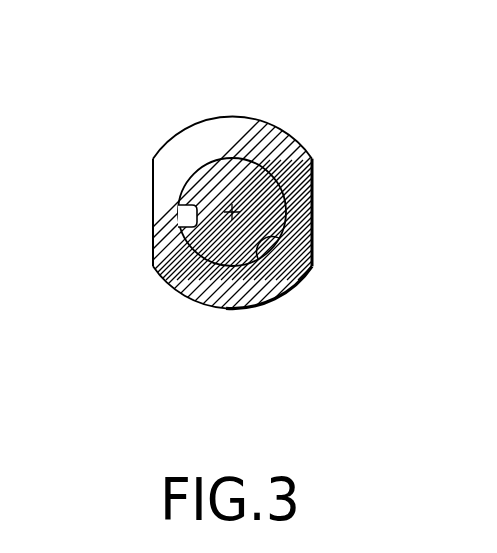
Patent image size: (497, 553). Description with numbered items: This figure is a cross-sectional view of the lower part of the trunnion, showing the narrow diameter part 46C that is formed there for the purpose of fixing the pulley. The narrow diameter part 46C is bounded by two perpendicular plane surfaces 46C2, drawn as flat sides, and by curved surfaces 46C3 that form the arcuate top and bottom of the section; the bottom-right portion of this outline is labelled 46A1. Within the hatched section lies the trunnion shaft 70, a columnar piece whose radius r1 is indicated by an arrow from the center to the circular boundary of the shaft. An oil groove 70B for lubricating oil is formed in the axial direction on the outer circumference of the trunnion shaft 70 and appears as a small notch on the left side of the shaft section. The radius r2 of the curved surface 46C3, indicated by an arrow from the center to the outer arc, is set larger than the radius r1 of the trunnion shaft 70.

The narrow diameter part 46C is at (295, 128).
The curved surface 46C3 is at (232, 116).
The perpendicular plane surface 46C2 is at (362, 195).
The thick bearing surface 46A1 is at (309, 270).
The trunnion shaft 70 is at (258, 259).
The oil groove 70B is at (185, 227).
The radius of the trunnion shaft r1 is at (270, 174).
The radius of the curved surface r2 is at (232, 212).